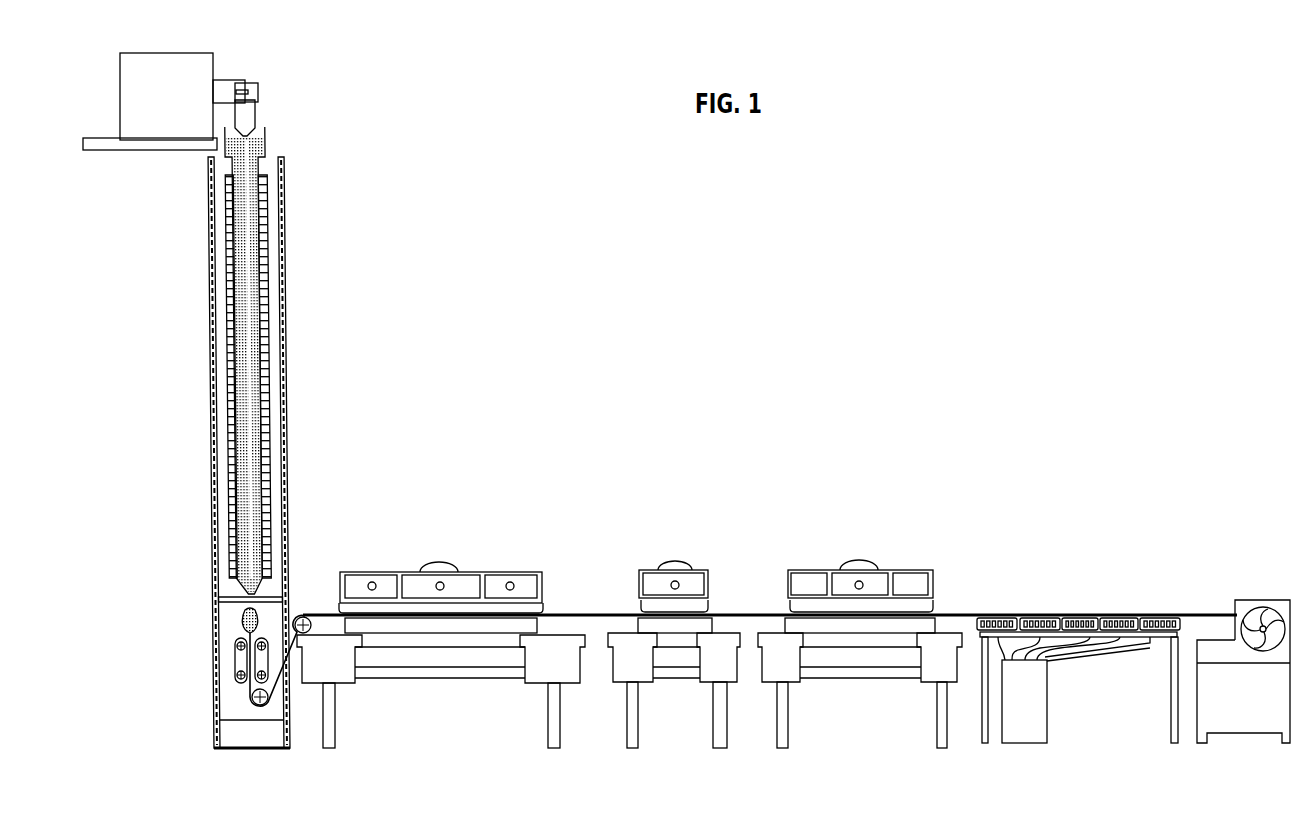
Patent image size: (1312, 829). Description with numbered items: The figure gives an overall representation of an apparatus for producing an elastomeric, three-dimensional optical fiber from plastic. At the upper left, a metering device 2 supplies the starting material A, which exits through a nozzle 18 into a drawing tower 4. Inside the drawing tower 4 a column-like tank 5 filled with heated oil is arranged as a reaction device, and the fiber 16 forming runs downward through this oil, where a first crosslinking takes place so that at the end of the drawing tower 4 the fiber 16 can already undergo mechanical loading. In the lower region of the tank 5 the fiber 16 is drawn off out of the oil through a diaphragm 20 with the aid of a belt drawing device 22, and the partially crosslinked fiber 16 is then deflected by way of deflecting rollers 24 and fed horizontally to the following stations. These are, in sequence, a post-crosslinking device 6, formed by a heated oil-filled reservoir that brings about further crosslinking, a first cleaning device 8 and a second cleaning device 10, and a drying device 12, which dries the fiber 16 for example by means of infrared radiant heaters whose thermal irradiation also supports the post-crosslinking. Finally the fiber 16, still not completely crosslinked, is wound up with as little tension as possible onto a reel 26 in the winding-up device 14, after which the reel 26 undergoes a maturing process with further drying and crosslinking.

The metering device 2 is at (254, 71).
The drawing tower 4 is at (306, 274).
The column-like tank 5 is at (262, 232).
The post-crosslinking device 6 is at (462, 556).
The first cleaning device 8 is at (685, 553).
The second cleaning device 10 is at (876, 553).
The drying device 12 is at (1110, 660).
The winding-up device 14 is at (1251, 578).
The fiber 16 is at (252, 382).
The nozzle 18 is at (256, 113).
The diaphragm 20 is at (240, 621).
The belt drawing device 22 is at (230, 664).
The deflecting rollers 24 is at (257, 706).
The reel 26 is at (1283, 605).